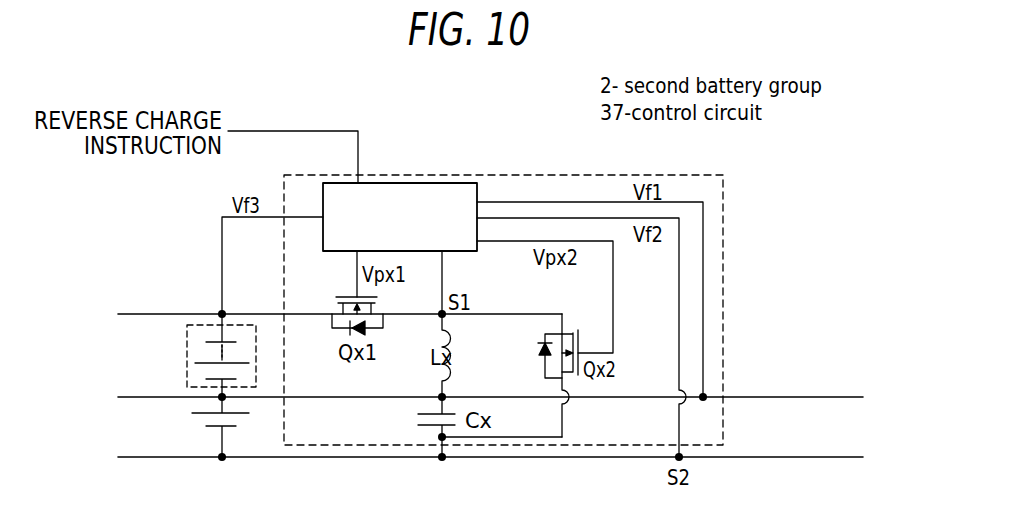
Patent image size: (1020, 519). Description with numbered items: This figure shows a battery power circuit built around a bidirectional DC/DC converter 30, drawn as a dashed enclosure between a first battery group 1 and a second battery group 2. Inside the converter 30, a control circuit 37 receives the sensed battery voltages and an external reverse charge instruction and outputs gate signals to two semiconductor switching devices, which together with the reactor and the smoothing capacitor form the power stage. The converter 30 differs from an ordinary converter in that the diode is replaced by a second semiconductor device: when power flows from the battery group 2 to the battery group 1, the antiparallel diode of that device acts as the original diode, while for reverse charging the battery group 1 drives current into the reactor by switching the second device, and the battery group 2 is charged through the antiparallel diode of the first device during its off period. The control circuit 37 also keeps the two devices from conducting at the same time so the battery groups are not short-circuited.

The battery group 1 is at (198, 413).
The battery group 2 is at (187, 362).
The bidirectional DC/DC converter 30 is at (723, 205).
The control circuit 37 is at (404, 190).